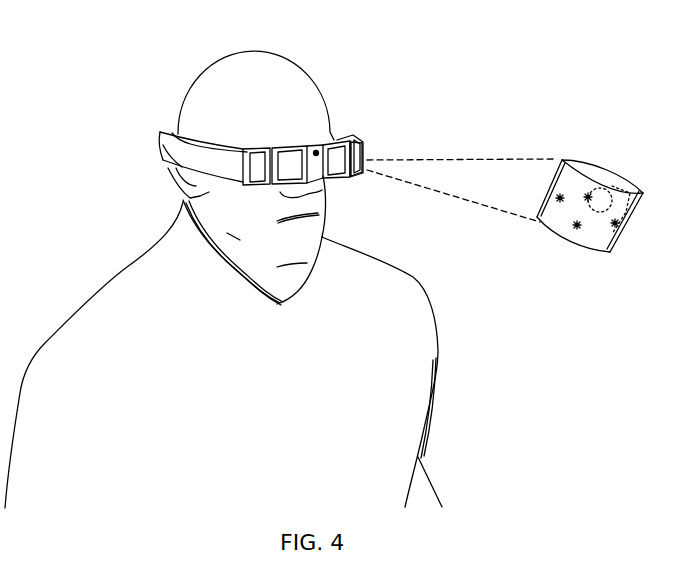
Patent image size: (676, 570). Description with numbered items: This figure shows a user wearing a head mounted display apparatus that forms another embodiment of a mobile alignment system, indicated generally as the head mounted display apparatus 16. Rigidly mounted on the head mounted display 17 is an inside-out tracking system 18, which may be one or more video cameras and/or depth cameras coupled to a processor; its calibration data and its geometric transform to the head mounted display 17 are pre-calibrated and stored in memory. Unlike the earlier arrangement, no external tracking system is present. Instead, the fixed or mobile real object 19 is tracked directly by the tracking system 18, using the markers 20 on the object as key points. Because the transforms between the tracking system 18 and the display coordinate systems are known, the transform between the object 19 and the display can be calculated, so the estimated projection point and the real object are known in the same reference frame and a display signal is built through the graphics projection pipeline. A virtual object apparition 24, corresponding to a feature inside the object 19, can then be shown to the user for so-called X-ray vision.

The head-mounted wearable device 16 is at (292, 63).
The head mounted display 17 is at (364, 137).
The inside-out tracking system cameras 18 is at (314, 149).
The real object 19 is at (595, 203).
The markers 20 is at (613, 226).
The virtual object apparition 24 is at (637, 210).